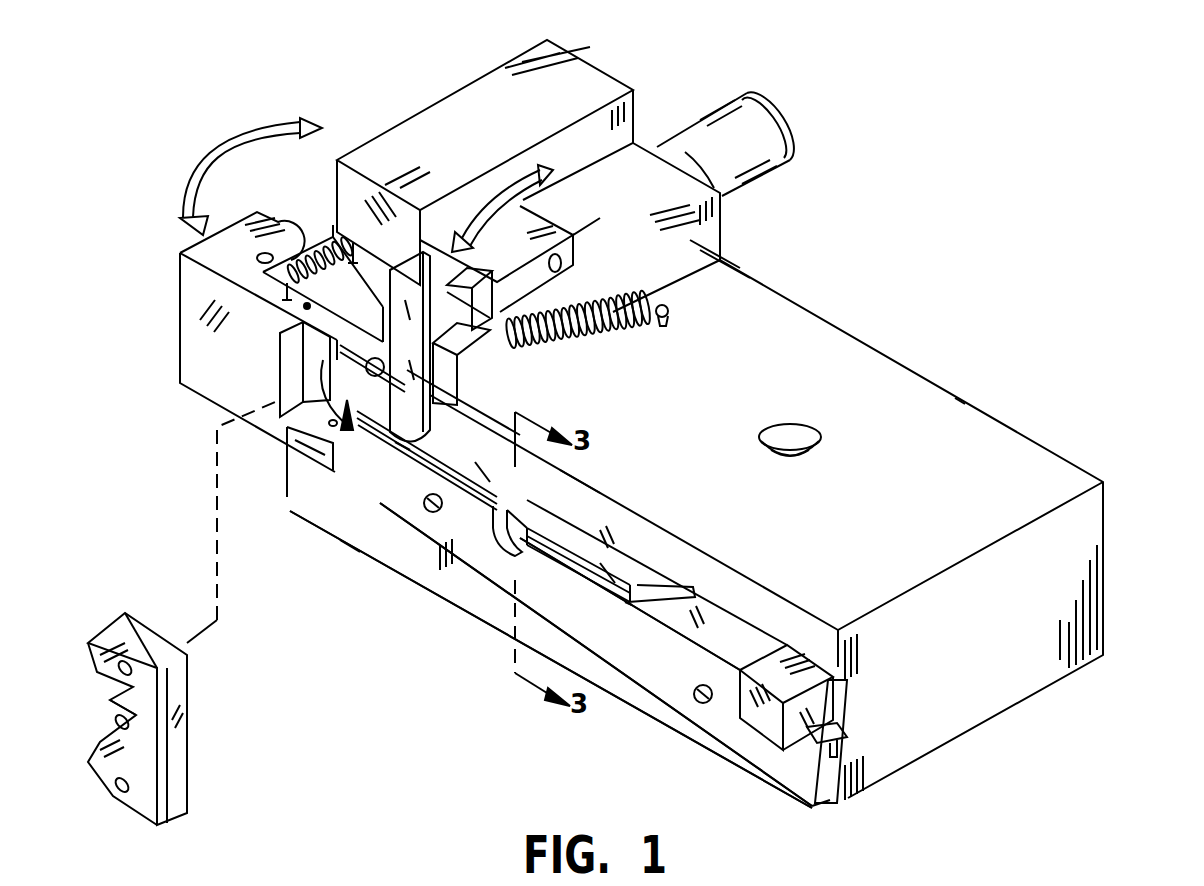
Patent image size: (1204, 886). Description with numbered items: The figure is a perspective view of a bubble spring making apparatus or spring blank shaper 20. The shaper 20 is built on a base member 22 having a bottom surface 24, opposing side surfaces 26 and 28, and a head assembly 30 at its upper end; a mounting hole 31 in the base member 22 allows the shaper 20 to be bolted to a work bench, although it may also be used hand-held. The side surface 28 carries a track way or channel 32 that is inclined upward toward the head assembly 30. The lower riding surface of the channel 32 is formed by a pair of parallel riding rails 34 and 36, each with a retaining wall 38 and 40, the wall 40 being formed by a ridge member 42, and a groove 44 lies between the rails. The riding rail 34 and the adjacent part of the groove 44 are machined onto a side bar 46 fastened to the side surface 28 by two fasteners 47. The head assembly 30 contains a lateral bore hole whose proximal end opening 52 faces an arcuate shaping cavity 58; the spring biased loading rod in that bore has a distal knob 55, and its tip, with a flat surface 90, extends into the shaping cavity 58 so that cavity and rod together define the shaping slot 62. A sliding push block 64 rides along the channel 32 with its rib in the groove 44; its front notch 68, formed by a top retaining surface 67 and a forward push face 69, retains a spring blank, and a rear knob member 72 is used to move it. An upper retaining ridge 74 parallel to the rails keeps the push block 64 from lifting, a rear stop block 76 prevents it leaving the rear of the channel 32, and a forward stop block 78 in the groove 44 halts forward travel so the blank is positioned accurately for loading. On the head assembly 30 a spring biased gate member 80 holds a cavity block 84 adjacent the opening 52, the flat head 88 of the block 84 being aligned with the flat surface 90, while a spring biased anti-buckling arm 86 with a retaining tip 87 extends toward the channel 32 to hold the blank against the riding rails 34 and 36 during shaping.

The spring blank shaper 20 is at (1060, 215).
The base member 22 is at (792, 316).
The bottom surface 24 is at (995, 723).
The side surface 26 is at (978, 392).
The side surface 28 is at (808, 618).
The head assembly 30 is at (470, 108).
The mounting hole 31 is at (790, 400).
The channel 32 is at (495, 438).
The riding rail 34 is at (450, 468).
The riding rail 36 is at (497, 578).
The retaining wall 38 is at (580, 488).
The retaining wall 40 is at (480, 492).
The ridge member 42 is at (393, 556).
The groove 44 is at (527, 524).
The side bar 46 is at (735, 745).
The fasteners 47 is at (430, 512).
The proximal end opening 52 is at (392, 385).
The distal knob 55 is at (798, 110).
The shaping cavity 58 is at (320, 470).
The shaping slot 62 is at (358, 547).
The push block 64 is at (760, 632).
The top retaining surface 67 is at (712, 595).
The front notch 68 is at (618, 610).
The forward push face 69 is at (648, 618).
The rear knob member 72 is at (812, 806).
The upper retaining ridge 74 is at (850, 682).
The rear stop block 76 is at (848, 730).
The forward stop block 78 is at (340, 395).
The gate member 80 is at (187, 297).
The cavity block 84 is at (120, 805).
The anti-buckling arm 86 is at (552, 232).
The retaining tip 87 is at (447, 435).
The flat head 88 is at (108, 712).
The flat surface 90 is at (325, 375).